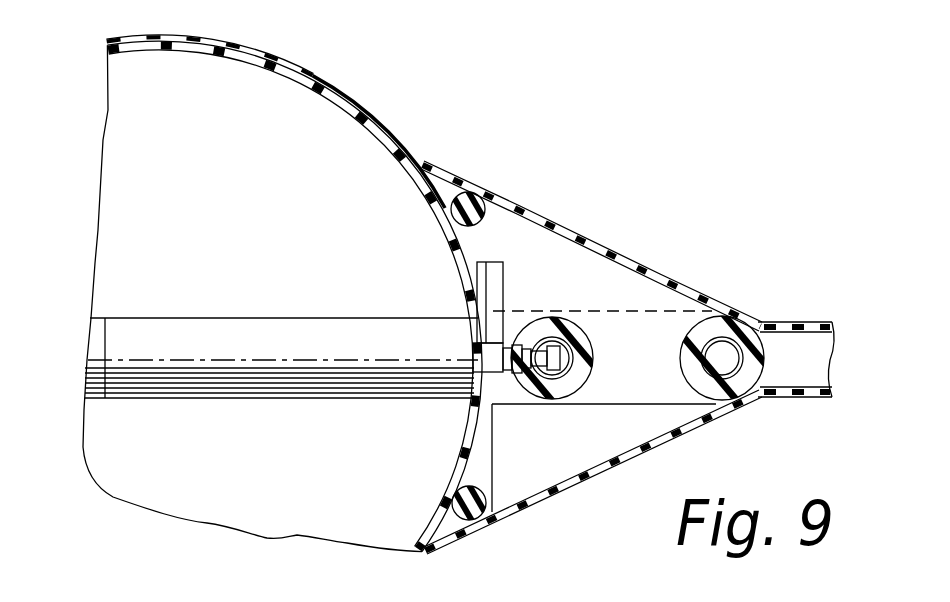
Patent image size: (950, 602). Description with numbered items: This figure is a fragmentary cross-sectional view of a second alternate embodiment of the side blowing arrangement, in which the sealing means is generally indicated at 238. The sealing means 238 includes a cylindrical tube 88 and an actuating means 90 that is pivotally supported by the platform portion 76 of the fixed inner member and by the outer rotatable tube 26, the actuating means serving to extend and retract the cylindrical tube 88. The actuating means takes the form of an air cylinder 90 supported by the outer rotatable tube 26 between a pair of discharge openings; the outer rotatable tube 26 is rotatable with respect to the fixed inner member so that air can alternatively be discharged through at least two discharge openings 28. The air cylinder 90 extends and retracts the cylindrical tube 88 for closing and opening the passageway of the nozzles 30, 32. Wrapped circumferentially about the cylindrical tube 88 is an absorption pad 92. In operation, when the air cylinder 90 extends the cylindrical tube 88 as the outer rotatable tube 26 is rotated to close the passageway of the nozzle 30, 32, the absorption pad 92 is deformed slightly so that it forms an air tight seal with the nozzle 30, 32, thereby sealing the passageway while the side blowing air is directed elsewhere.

The outer rotatable tube 26 is at (379, 117).
The discharge openings 28 is at (459, 249).
The nozzle 30 is at (593, 472).
The nozzle 32 is at (555, 490).
The platform portion 76 is at (97, 317).
The cylindrical tube 88 is at (564, 384).
The actuating means (air cylinder) 90 is at (262, 320).
The absorption pad 92 is at (593, 346).
The sealing means 238 is at (551, 311).